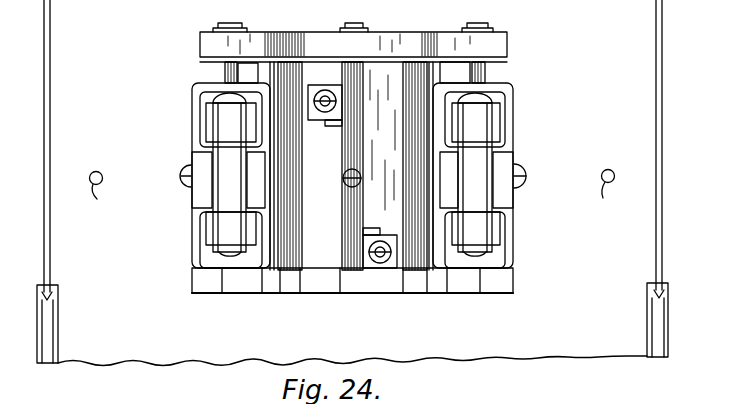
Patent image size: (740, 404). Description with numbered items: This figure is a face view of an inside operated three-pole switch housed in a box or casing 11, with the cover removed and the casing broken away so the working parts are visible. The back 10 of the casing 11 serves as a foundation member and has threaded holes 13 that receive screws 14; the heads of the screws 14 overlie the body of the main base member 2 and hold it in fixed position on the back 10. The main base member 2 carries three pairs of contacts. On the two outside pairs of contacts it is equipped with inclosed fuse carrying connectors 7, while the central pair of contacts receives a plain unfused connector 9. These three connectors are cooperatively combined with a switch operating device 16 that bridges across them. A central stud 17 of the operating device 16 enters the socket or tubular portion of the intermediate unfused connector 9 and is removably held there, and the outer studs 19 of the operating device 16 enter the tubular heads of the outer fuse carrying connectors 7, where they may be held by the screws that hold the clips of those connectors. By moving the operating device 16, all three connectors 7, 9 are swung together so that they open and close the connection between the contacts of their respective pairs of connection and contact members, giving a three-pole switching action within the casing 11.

The main base member 2 is at (367, 292).
The inclosed fuse carrying connector 7 is at (192, 232).
The unfused connector 9 is at (347, 260).
The back 10 is at (601, 340).
The casing 11 is at (663, 202).
The threaded holes 13 is at (352, 194).
The screws 14 is at (184, 168).
The switch operating device 16 is at (440, 50).
The central stud 17 is at (381, 55).
The outer studs 19 is at (225, 70).